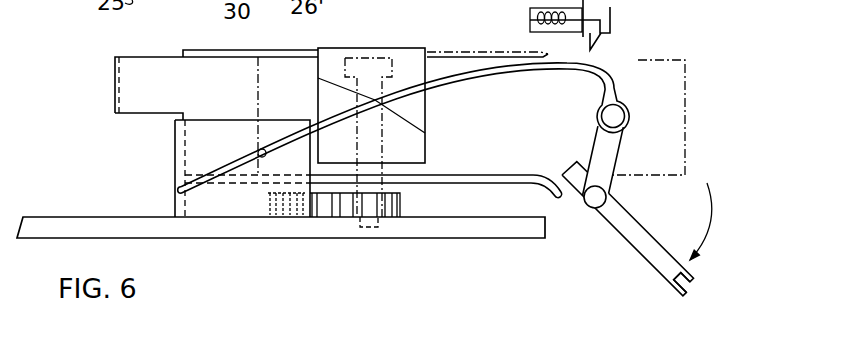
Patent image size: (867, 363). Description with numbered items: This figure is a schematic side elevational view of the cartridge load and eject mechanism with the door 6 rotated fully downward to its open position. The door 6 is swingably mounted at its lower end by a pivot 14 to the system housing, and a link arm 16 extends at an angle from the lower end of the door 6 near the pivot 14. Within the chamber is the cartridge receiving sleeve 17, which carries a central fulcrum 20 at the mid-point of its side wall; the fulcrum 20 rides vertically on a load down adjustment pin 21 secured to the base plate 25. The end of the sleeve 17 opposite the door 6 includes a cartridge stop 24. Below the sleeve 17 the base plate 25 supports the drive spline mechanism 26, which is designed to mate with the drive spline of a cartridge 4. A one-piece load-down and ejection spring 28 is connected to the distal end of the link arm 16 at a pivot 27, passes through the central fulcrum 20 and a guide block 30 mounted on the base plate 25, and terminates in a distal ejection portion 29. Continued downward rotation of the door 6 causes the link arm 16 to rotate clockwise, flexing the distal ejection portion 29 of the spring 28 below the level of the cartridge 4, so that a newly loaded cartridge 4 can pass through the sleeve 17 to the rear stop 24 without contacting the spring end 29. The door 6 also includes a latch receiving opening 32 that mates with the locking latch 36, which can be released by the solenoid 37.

The cartridge 4 is at (673, 127).
The door 6 is at (650, 253).
The pivot 14 is at (606, 196).
The link arm 16 is at (608, 159).
The cartridge receiving sleeve 17 is at (447, 58).
The central fulcrum 20 is at (329, 52).
The load down adjustment pin 21 is at (373, 54).
The cartridge stop 24 is at (115, 92).
The base plate 25 is at (212, 226).
The drive spline mechanism 26 is at (342, 206).
The pivot 27 is at (614, 115).
The load-down and ejection spring 28 is at (497, 74).
The distal ejection portion 29 is at (178, 191).
The guide block 30 is at (236, 206).
The latch receiving opening 32 is at (686, 283).
The locking latch 36 is at (618, 25).
The solenoid 37 is at (548, 8).